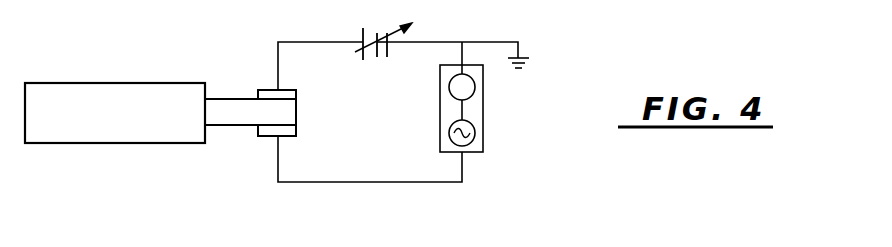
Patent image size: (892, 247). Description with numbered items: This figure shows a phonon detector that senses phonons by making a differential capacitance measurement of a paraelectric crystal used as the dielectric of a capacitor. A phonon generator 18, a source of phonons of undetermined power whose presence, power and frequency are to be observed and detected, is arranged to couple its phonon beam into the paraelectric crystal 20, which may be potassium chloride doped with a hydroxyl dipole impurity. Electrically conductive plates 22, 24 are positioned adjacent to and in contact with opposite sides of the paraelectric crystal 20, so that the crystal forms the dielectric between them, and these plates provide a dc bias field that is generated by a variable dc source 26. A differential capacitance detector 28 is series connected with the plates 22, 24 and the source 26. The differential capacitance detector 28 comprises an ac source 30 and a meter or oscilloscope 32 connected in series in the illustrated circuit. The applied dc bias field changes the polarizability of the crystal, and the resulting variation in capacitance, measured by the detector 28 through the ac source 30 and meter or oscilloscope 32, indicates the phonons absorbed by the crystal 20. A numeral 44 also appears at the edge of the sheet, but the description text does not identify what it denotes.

The phonon generator 18 is at (80, 83).
The paraelectric crystal 20 is at (222, 99).
The electrically conductive plate 22 is at (290, 90).
The electrically conductive plate 24 is at (268, 137).
The variable dc source 26 is at (360, 33).
The differential capacitance detector 28 is at (483, 120).
The ac source 30 is at (470, 142).
The meter or oscilloscope 32 is at (475, 85).
The partial numeral at sheet edge 44 is at (297, 242).